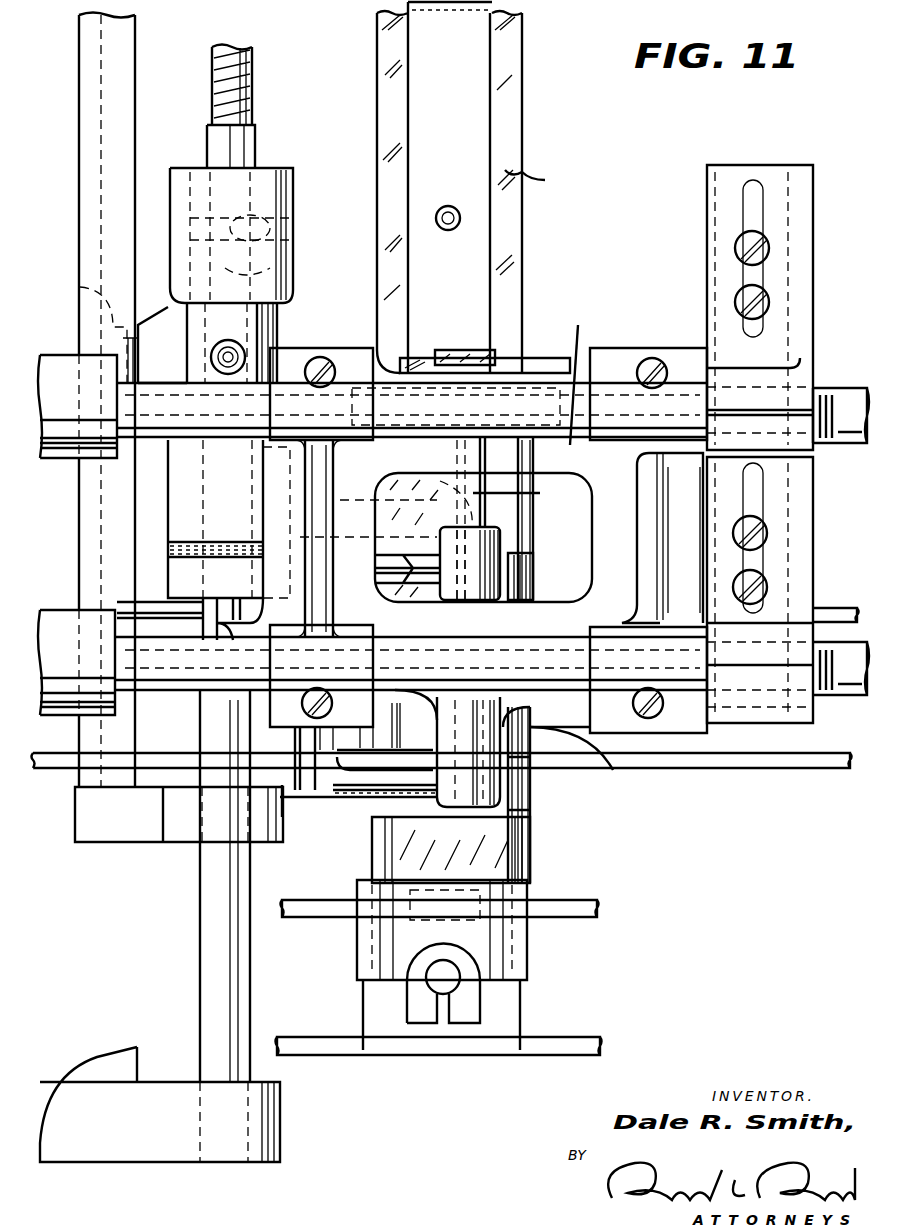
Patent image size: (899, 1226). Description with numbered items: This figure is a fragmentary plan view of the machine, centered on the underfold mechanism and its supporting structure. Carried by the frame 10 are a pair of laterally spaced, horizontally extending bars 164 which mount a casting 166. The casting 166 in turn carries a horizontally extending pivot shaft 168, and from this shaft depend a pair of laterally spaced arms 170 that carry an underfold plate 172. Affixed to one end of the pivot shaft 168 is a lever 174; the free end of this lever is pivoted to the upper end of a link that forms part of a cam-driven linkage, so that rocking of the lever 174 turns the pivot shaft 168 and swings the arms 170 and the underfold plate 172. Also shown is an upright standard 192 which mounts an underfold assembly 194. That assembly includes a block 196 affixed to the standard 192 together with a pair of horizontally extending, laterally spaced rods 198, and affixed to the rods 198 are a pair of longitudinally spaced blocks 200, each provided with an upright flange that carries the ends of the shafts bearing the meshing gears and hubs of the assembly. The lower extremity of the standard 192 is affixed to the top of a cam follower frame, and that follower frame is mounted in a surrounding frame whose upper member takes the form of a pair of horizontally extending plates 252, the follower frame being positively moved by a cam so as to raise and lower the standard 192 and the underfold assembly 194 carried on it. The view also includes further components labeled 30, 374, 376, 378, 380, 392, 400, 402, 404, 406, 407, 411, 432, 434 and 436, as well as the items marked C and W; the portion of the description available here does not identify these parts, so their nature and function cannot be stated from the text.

The frame 10 is at (110, 1137).
The guide rail 30 is at (830, 615).
The horizontally extending bars 164 is at (228, 440).
The casting 166 is at (591, 372).
The pivot shaft 168 is at (529, 502).
The arms 170 is at (408, 583).
The underfold plate 172 is at (300, 787).
The lever 174 is at (447, 350).
The upright standard 192 is at (445, 977).
The underfold assembly 194 is at (597, 763).
The block 196 is at (400, 950).
The rods 198 is at (390, 835).
The blocks 200 is at (503, 563).
The plates 252 is at (577, 912).
The bar 374 is at (541, 360).
The column 376 is at (455, 120).
The rod 378 is at (470, 268).
The hidden recess 380 is at (352, 403).
The pin 392 is at (447, 206).
The post 400 is at (122, 130).
The hidden arc 402 is at (78, 329).
The wedge member 404 is at (160, 338).
The block 406 is at (262, 195).
The collar 407 is at (252, 130).
The rod 411 is at (530, 535).
The hidden arc 432 is at (270, 268).
The hidden cam 434 is at (272, 226).
The threaded rod 436 is at (253, 68).
The cam housing C is at (446, 537).
The workpiece W is at (541, 185).